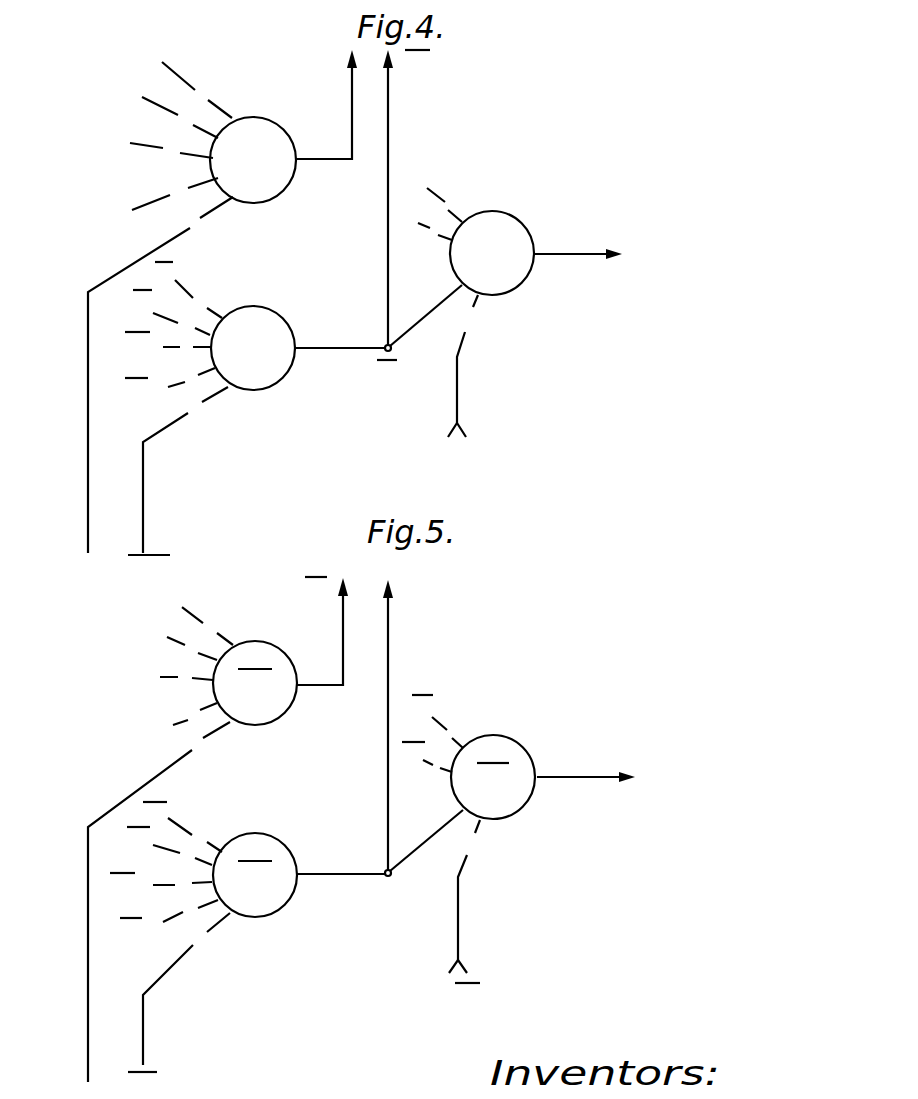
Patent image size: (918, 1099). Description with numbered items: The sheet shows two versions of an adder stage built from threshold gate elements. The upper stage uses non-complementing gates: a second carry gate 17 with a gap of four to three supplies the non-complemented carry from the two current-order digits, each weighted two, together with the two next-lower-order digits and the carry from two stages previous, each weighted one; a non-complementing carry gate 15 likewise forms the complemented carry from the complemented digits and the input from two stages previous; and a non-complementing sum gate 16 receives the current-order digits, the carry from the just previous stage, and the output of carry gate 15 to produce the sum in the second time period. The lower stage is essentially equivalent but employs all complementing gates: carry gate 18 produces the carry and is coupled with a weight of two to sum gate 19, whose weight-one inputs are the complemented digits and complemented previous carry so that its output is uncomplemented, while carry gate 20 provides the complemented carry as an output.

In FIG. 4, the non-complementing carry gate 15 is at (287, 312).
In FIG. 4, the non-complementing sum gate 16 is at (522, 218).
In FIG. 4, the second carry gate 17 is at (280, 122).
In FIG. 5, the carry gate 18 is at (283, 837).
In FIG. 5, the sum gate 19 is at (523, 745).
In FIG. 5, the carry gate 20 is at (278, 647).